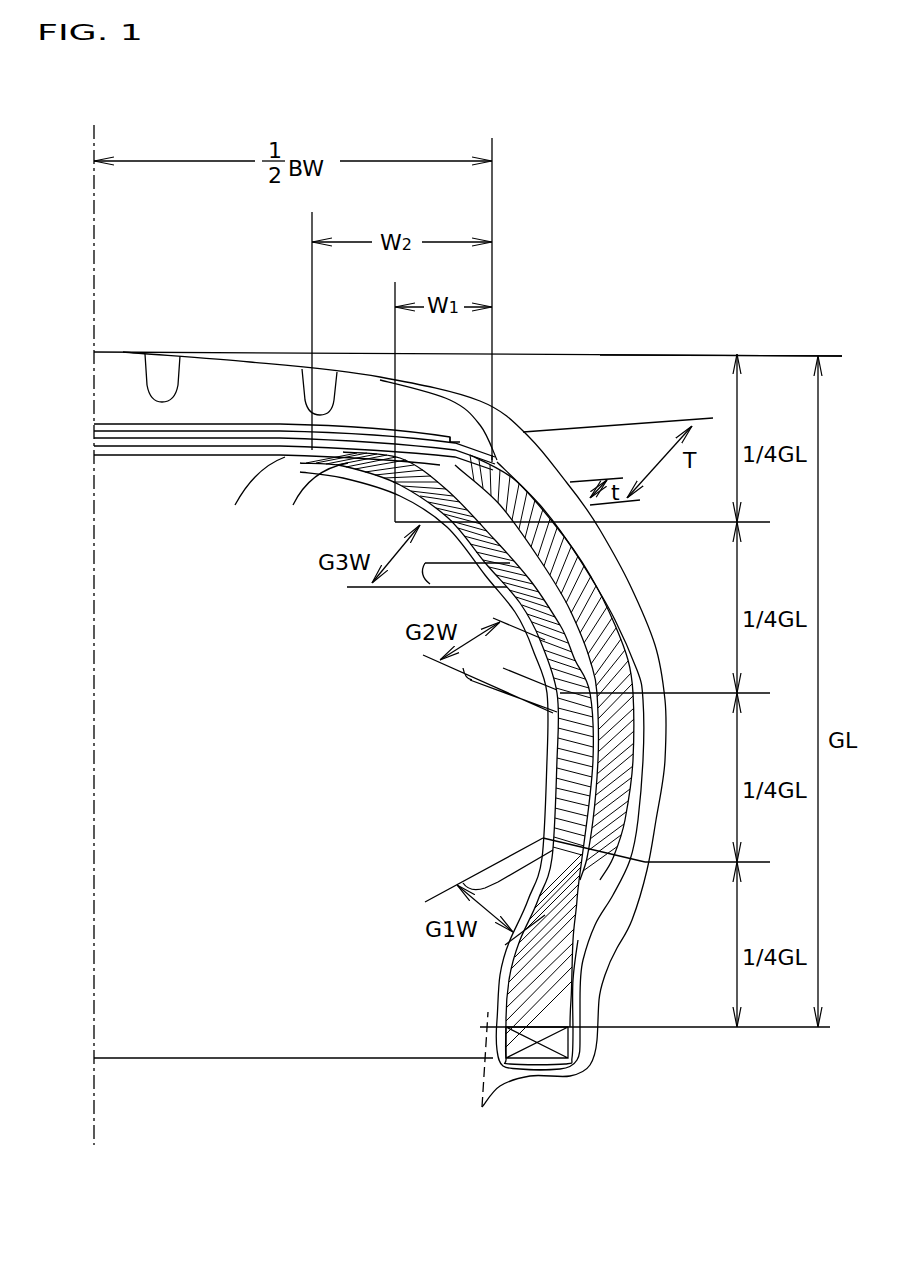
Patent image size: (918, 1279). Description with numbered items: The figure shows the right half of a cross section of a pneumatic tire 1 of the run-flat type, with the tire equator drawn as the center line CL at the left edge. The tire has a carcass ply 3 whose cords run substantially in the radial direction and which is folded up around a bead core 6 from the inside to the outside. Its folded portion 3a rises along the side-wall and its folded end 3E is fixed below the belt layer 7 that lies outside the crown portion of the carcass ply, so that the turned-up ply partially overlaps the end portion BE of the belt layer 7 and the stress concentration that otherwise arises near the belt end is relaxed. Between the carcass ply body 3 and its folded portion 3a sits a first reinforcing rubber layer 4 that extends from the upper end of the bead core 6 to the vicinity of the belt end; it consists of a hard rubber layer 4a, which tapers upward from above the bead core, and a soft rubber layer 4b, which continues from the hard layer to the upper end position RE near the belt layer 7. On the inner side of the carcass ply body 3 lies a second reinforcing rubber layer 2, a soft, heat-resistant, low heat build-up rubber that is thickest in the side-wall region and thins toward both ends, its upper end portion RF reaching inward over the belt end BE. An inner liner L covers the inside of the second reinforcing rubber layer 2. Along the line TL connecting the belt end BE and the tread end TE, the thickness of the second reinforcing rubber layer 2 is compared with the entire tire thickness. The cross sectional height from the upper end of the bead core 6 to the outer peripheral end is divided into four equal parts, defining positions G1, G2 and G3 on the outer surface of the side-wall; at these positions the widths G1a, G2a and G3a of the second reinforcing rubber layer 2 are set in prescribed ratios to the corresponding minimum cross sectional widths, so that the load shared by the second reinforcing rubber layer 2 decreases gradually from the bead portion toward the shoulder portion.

The pneumatic tire 1 is at (640, 942).
The second reinforcing rubber layer 2 is at (577, 738).
The carcass ply 3 is at (593, 774).
The folded portion of the carcass ply 3a is at (622, 606).
The folded end of the carcass ply 3E is at (478, 455).
The first reinforcing rubber layer 4 is at (630, 566).
The hard rubber layer 4a is at (553, 999).
The soft rubber layer 4b is at (644, 653).
The bead core 6 is at (541, 1052).
The belt layer 7 is at (92, 422).
The end portion of the belt layer BE is at (492, 468).
The tread end TE is at (553, 415).
The line connecting belt end and tread end TL is at (640, 368).
The upper end portion of the second reinforcing rubber layer RF is at (251, 496).
The upper end position of the first reinforcing rubber layer RE is at (311, 499).
The position G1 on the side-wall outer surface G1 is at (656, 850).
The position G2 on the side-wall outer surface G2 is at (665, 682).
The position G3 on the side-wall outer surface G3 is at (582, 510).
The width of the second reinforcing rubber layer at position G1 G1a is at (467, 880).
The width of the second reinforcing rubber layer at position G2 G2a is at (470, 673).
The width of the second reinforcing rubber layer at position G3 G3a is at (425, 569).
The inner liner L is at (480, 1027).
The tire equator center line CL is at (94, 621).